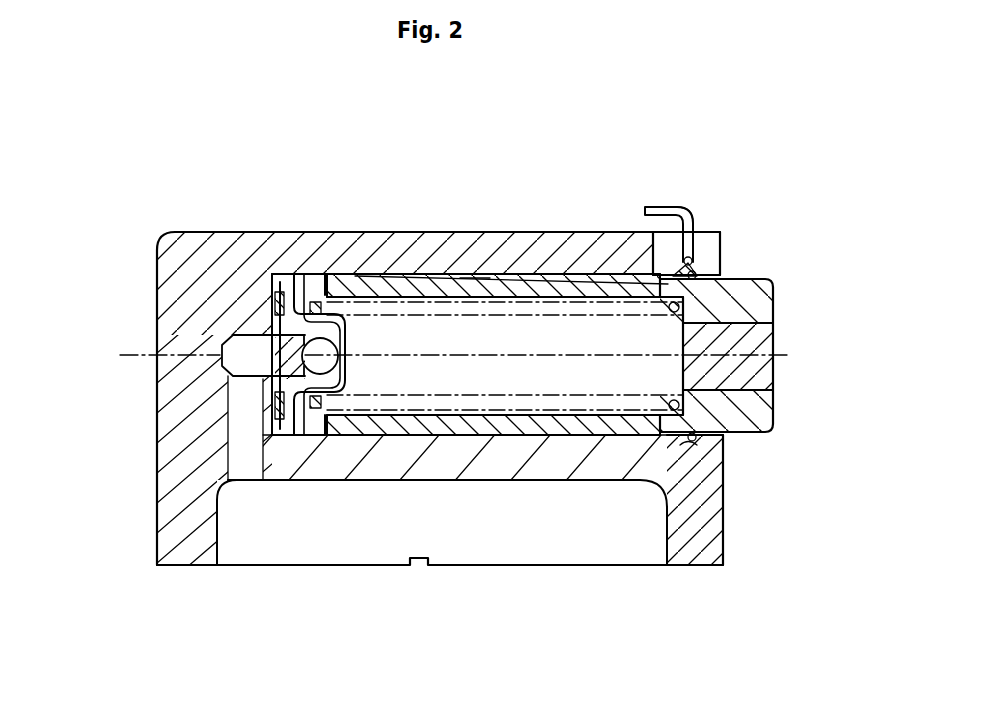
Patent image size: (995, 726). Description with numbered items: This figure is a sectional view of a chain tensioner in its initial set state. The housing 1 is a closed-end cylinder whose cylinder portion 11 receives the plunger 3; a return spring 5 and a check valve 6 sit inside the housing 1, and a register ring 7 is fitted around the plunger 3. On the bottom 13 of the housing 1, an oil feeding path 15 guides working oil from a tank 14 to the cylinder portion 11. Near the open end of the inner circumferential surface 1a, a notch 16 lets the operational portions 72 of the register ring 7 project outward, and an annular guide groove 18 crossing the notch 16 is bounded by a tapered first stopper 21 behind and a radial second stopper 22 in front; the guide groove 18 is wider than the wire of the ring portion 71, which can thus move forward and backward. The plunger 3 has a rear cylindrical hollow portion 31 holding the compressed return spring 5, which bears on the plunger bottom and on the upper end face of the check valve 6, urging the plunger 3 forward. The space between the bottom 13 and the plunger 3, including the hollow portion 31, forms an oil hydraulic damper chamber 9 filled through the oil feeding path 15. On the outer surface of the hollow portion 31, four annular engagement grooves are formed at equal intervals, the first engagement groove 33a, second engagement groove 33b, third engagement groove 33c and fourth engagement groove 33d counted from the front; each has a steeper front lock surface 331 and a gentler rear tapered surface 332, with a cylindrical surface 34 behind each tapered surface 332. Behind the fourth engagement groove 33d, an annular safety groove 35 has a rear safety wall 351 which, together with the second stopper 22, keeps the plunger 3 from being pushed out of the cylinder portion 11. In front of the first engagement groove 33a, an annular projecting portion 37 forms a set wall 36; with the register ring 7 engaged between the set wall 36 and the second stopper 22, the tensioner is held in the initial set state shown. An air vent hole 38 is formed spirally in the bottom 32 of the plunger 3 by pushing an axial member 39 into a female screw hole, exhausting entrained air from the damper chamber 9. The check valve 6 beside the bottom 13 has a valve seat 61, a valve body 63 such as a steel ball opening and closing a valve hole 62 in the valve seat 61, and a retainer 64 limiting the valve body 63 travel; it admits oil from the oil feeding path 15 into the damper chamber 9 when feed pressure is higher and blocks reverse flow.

The housing 1 is at (170, 227).
The inner circumferential surface 1a is at (357, 274).
The plunger 3 is at (780, 279).
The return spring 5 is at (390, 403).
The check valve 6 is at (365, 333).
The register ring 7 is at (658, 200).
The oil hydraulic damper chamber 9 is at (430, 365).
The cylinder portion 11 is at (313, 274).
The bottom 13 is at (230, 243).
The tank 14 is at (270, 548).
The oil feeding path 15 is at (237, 397).
The notch 16 is at (713, 243).
The guide groove 18 is at (700, 447).
The first stopper 21 is at (635, 278).
The second stopper 22 is at (733, 345).
The hollow portion 31 is at (413, 274).
The bottom 32 is at (745, 418).
The first engagement groove 33a is at (655, 437).
The second engagement groove 33b is at (612, 435).
The third engagement groove 33c is at (570, 435).
The fourth engagement groove 33d is at (532, 435).
The cylindrical surface 34 is at (505, 280).
The safety groove 35 is at (466, 480).
The set wall 36 is at (723, 478).
The annular projecting portion 37 is at (690, 445).
The air vent hole 38 is at (748, 281).
The axial member 39 is at (760, 388).
The valve seat 61 is at (288, 282).
The valve hole 62 is at (297, 343).
The valve body 63 is at (190, 495).
The retainer 64 is at (357, 437).
The ring portion 71 is at (668, 292).
The operational portions 72 is at (685, 208).
The lock surface 331 is at (577, 280).
The tapered surface 332 is at (545, 278).
The safety wall 351 is at (477, 280).